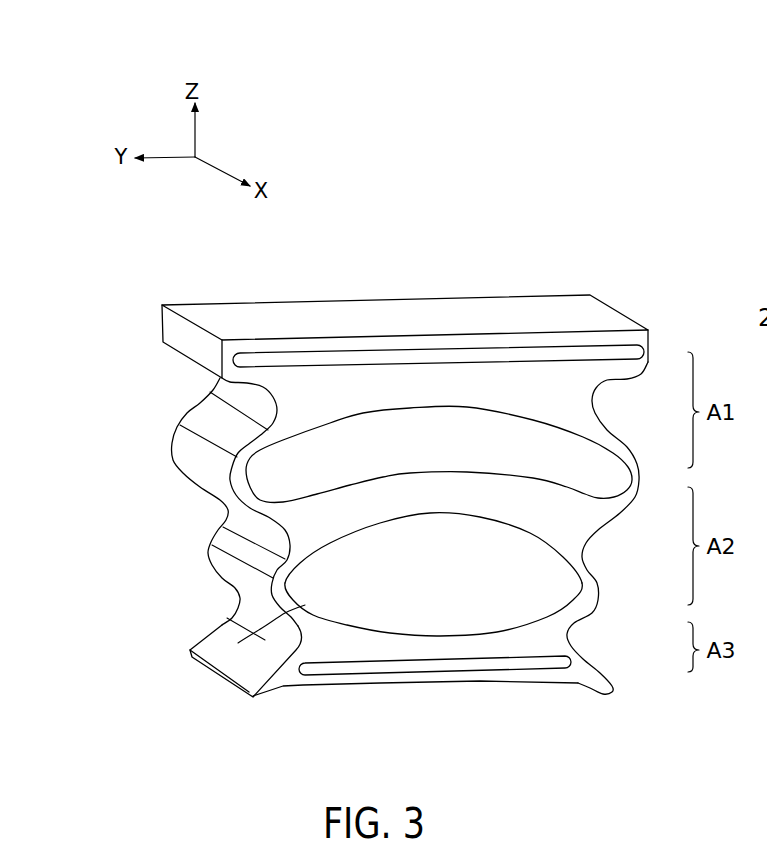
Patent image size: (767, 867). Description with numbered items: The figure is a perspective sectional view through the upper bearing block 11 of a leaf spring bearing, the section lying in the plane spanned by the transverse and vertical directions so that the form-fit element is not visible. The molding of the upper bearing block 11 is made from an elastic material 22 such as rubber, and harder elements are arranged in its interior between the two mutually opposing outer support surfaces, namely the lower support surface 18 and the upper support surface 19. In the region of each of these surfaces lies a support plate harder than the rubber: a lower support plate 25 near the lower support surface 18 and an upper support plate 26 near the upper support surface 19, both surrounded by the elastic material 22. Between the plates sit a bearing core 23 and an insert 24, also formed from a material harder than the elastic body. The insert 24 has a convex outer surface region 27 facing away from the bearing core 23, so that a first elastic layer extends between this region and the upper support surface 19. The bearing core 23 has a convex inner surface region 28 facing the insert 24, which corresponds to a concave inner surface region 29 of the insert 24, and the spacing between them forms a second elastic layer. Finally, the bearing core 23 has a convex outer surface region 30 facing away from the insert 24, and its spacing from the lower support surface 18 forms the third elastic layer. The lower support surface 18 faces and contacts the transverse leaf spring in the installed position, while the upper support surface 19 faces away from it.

The upper bearing block 11 is at (503, 223).
The lower support surface 18 is at (488, 688).
The upper support surface 19 is at (296, 320).
The elastic material 22 is at (305, 549).
The bearing core 23 is at (212, 666).
The insert 24 is at (272, 472).
The lower support plate 25 is at (380, 679).
The upper support plate 26 is at (562, 353).
The convex outer surface region 27 is at (398, 407).
The convex inner surface region 28 is at (323, 538).
The concave inner surface region 29 is at (530, 496).
The convex outer surface region 30 is at (502, 631).